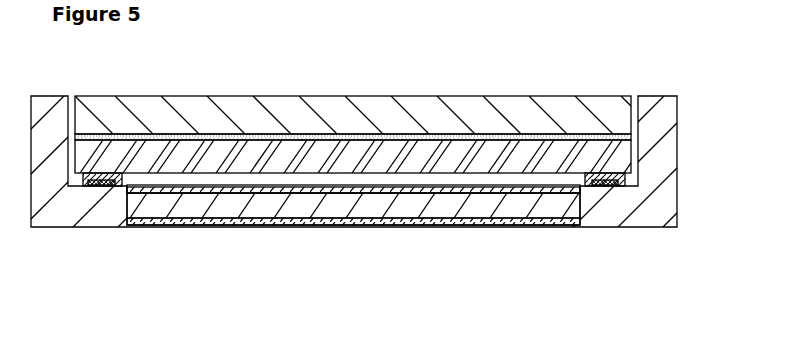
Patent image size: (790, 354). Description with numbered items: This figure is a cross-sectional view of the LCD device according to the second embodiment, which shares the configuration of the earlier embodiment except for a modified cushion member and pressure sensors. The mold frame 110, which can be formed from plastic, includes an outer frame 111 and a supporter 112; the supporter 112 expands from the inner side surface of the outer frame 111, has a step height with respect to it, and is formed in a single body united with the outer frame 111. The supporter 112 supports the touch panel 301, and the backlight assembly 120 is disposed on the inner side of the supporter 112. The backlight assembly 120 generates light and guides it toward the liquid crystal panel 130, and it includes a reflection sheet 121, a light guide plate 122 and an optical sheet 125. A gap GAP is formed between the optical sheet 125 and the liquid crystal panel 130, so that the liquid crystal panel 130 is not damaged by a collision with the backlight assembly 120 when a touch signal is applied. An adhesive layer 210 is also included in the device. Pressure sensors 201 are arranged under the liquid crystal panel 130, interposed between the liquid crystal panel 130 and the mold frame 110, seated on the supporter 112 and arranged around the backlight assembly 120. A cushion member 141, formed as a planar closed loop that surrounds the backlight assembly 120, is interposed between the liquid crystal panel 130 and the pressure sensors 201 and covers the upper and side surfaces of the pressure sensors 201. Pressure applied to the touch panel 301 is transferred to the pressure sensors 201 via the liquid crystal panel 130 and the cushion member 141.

The mold frame 110 is at (395, 214).
The outer frame 111 is at (43, 213).
The supporter 112 is at (100, 213).
The backlight assembly 120 is at (353, 247).
The reflection sheet 121 is at (383, 205).
The light guide plate 122 is at (322, 275).
The optical sheet 125 is at (328, 190).
The liquid crystal panel 130 is at (213, 155).
The cushion member 141 is at (112, 182).
The pressure sensors 201 is at (98, 175).
The adhesive layer 210 is at (350, 138).
The touch panel 301 is at (254, 115).
The gap GAP is at (233, 180).